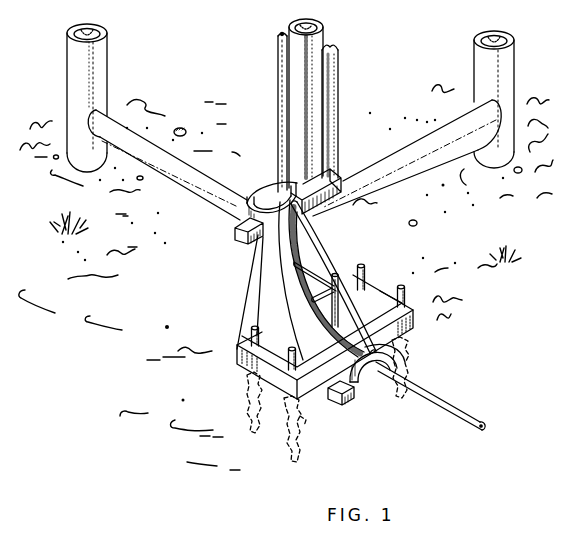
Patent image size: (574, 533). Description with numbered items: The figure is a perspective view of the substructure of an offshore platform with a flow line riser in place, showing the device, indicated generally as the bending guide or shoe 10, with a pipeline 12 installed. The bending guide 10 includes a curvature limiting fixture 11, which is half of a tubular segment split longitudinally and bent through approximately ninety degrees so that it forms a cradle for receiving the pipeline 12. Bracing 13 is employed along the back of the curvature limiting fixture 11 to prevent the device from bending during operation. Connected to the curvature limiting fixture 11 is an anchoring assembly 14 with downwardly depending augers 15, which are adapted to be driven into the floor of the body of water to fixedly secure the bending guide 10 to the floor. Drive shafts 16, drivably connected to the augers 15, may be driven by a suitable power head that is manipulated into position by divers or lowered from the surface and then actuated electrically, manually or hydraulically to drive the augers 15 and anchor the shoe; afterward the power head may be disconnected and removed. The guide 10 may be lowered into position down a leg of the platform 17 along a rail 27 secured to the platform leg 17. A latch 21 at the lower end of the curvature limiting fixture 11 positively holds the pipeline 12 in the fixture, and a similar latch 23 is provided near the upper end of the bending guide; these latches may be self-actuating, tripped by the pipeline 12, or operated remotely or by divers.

The bending guide 10 is at (244, 263).
The curvature limiting fixture 11 is at (278, 289).
The pipeline 12 is at (438, 397).
The bracing 13 is at (331, 249).
The anchoring assembly 14 is at (393, 330).
The augers 15 is at (247, 380).
The drive shafts 16 is at (251, 333).
The platform leg 17 is at (325, 37).
The latch 21 is at (346, 401).
The latch 23 is at (233, 232).
The rail 27 is at (333, 95).